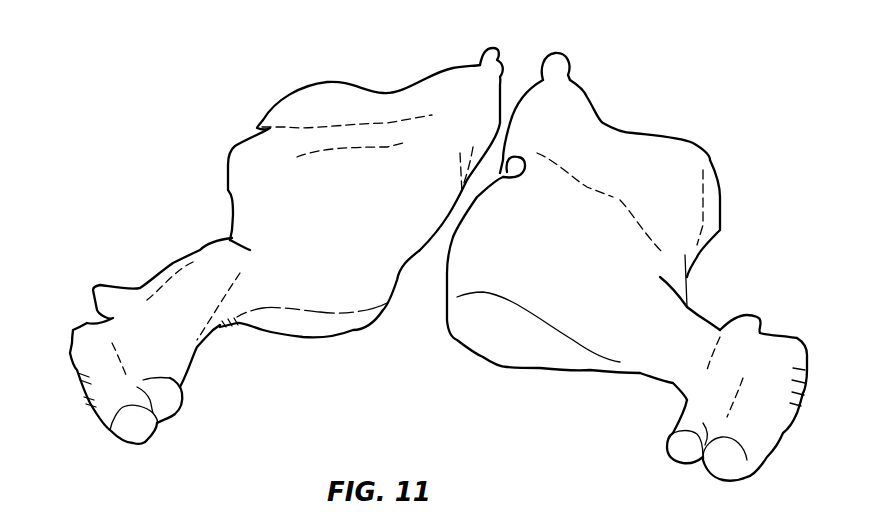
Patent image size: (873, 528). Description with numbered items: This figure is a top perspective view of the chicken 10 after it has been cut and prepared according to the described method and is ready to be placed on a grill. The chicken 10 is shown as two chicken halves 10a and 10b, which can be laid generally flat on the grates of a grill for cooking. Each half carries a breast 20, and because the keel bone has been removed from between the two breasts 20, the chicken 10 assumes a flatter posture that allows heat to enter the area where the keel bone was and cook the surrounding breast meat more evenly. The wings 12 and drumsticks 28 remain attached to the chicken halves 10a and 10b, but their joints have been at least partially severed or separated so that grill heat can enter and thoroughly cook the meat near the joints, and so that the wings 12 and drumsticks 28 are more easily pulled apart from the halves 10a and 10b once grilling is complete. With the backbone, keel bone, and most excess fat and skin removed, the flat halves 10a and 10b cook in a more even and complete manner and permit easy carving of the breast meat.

The chicken 10 is at (686, 94).
The chicken half 10a is at (225, 163).
The chicken half 10b is at (727, 197).
The wing 12 is at (72, 337).
The chicken breast 20 is at (303, 327).
The drumstick 28 is at (453, 75).